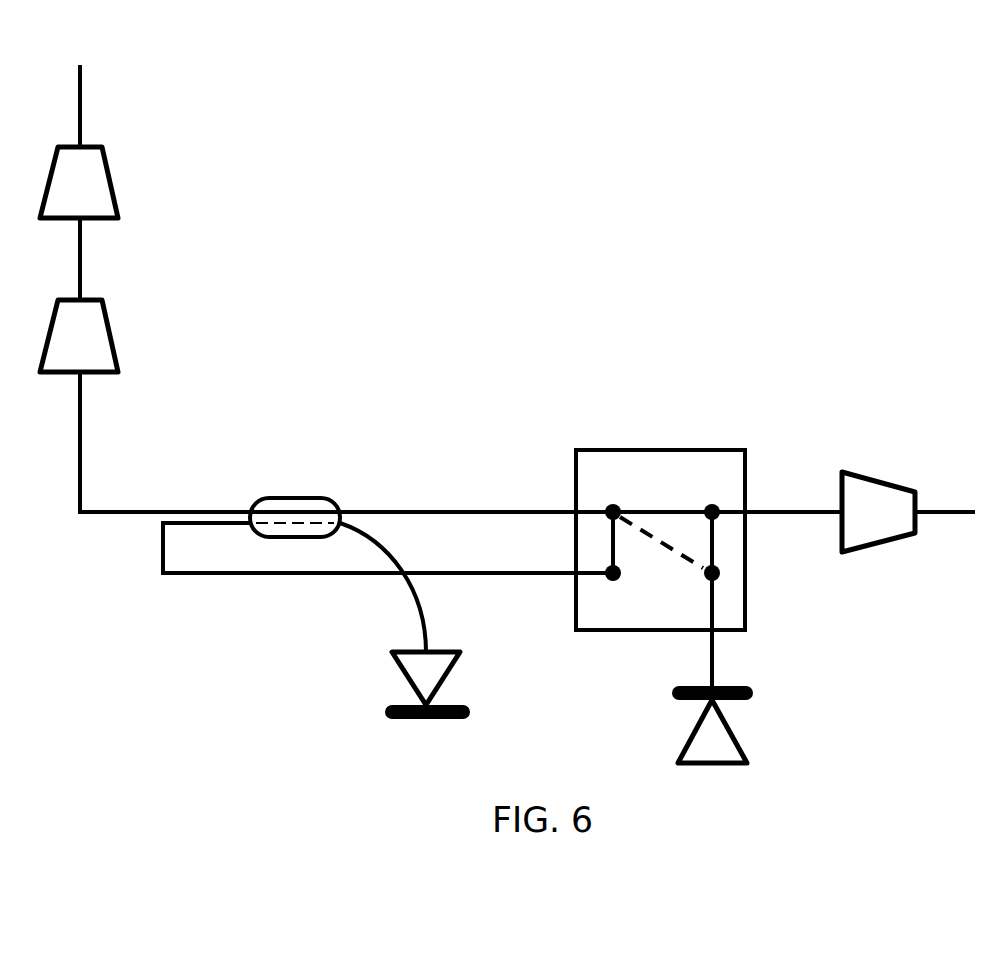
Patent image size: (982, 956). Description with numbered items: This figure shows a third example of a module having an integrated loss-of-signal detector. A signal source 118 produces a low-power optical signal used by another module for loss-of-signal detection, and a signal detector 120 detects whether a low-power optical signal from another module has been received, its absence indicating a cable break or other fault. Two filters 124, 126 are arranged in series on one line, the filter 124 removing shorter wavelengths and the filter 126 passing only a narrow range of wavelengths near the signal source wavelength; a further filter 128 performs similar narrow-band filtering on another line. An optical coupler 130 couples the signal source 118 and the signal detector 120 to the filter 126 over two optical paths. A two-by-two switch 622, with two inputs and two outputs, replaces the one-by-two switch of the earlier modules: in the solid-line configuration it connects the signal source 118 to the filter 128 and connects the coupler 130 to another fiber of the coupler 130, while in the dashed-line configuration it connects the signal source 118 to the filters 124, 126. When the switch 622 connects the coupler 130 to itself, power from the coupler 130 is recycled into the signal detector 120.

The signal source 118 is at (746, 720).
The signal detector 120 is at (388, 687).
The filter 124 is at (110, 171).
The filter 126 is at (127, 351).
The filter 128 is at (882, 475).
The optical coupler 130 is at (296, 497).
The 2×2 switch 622 is at (641, 449).